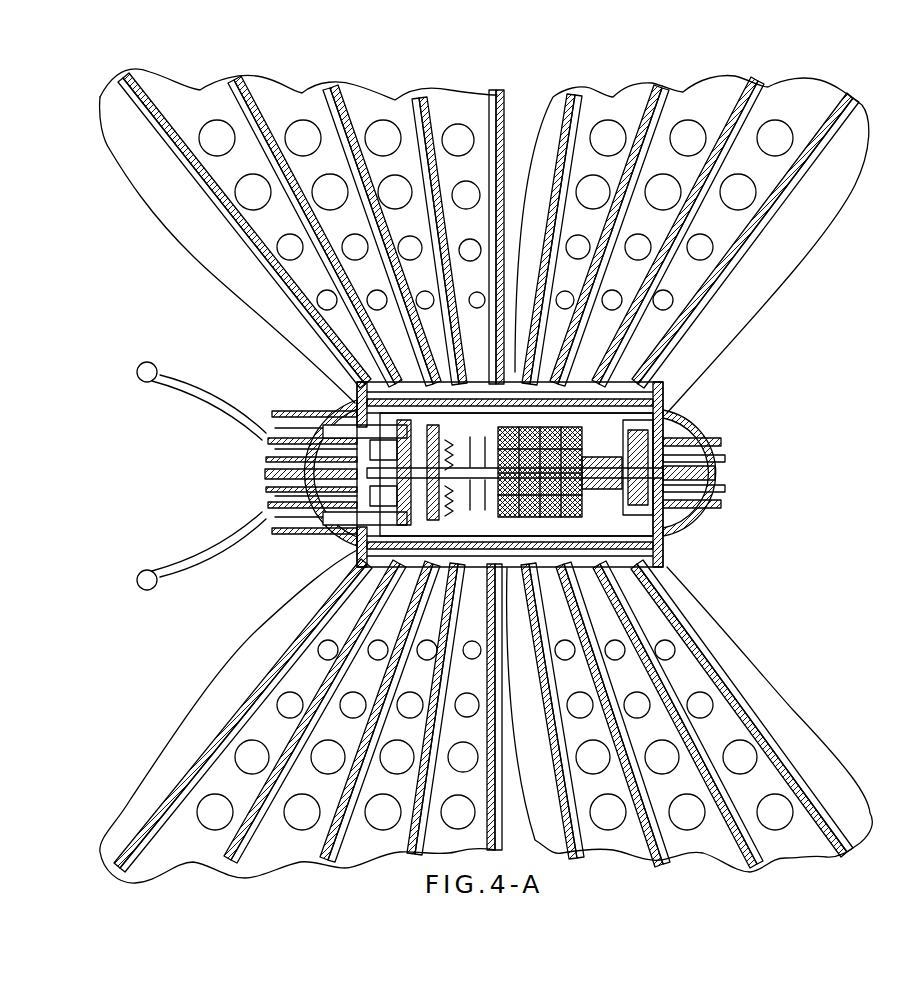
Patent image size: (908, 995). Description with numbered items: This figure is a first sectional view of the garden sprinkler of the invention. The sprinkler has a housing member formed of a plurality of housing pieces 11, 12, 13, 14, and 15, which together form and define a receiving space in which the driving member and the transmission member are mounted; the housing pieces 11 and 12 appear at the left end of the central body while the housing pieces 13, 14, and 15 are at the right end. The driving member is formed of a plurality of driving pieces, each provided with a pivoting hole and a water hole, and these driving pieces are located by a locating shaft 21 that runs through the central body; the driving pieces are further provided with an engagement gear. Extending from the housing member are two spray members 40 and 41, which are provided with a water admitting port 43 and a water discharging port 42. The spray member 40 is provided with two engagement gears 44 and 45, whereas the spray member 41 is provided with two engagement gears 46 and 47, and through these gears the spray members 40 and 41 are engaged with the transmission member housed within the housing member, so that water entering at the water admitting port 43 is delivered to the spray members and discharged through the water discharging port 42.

The housing piece 11 is at (257, 476).
The housing piece 12 is at (307, 548).
The housing piece 13 is at (665, 568).
The housing piece 14 is at (688, 445).
The housing piece 15 is at (737, 477).
The locating shaft 21 is at (476, 549).
The spray member 40 is at (827, 56).
The spray member 41 is at (800, 845).
The water discharging port 42 is at (576, 95).
The water admitting port 43 is at (667, 417).
The engagement gear 44 is at (355, 405).
The engagement gear 45 is at (735, 470).
The engagement gear 46 is at (355, 545).
The engagement gear 47 is at (695, 532).